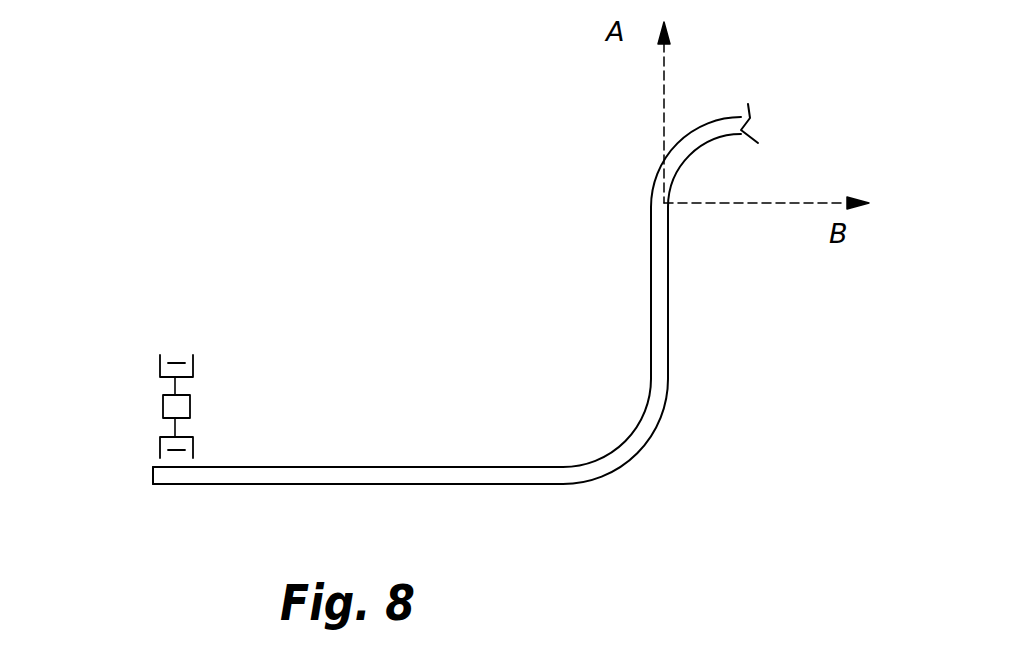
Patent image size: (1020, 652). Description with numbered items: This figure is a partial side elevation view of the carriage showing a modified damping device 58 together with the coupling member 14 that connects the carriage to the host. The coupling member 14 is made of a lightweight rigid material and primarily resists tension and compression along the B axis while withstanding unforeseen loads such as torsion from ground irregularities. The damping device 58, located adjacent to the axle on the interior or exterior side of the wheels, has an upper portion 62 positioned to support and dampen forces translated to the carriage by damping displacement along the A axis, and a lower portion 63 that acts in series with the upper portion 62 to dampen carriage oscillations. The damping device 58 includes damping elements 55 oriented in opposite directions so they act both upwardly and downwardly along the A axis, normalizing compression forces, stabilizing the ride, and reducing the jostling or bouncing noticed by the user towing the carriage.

The coupling member 14 is at (628, 447).
The damping elements 55 is at (175, 363).
The damping device 58 is at (163, 405).
The upper portion 62 is at (198, 359).
The lower portion 63 is at (198, 443).